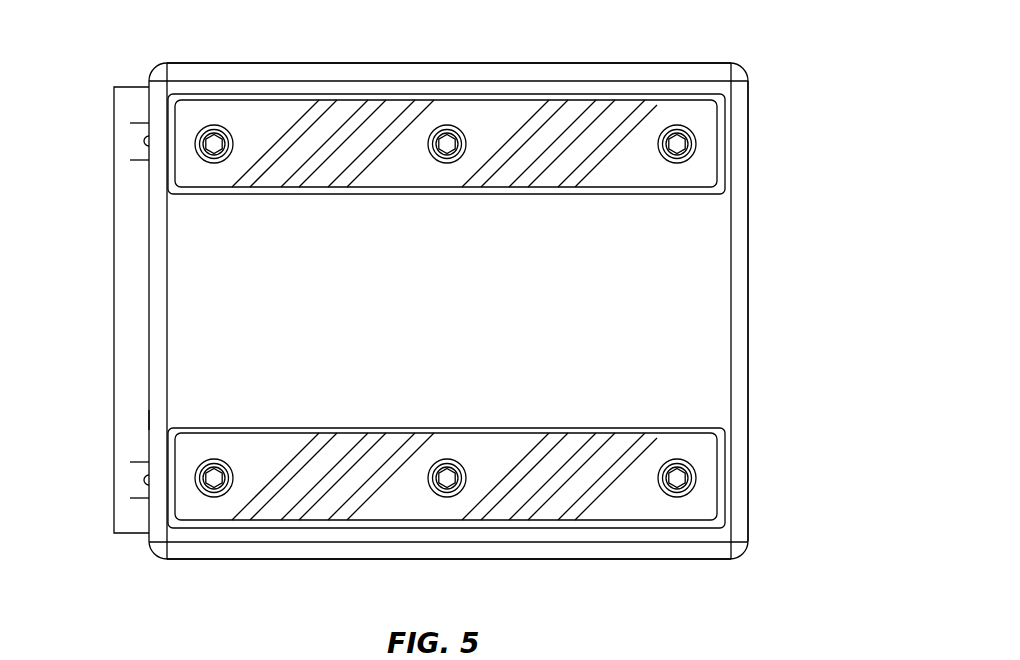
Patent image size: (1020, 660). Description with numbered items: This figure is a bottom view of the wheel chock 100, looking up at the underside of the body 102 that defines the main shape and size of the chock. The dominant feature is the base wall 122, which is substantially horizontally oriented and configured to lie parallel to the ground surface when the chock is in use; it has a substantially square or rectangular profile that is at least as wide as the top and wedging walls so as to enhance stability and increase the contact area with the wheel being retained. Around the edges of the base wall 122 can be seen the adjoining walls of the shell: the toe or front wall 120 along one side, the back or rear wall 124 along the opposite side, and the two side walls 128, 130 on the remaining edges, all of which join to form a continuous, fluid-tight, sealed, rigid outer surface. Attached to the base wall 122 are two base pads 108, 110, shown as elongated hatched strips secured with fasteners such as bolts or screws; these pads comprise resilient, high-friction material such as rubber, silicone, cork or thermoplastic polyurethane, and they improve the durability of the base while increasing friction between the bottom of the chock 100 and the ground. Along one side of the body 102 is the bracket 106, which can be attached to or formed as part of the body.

The wheel chock 100 is at (86, 111).
The body 102 is at (360, 58).
The bracket 106 is at (135, 273).
The base pad 108 is at (508, 118).
The base pad 110 is at (572, 491).
The toe or front wall 120 is at (748, 188).
The base wall 122 is at (464, 321).
The back or rear wall 124 is at (149, 420).
The side wall 128 is at (237, 63).
The side wall 130 is at (292, 559).